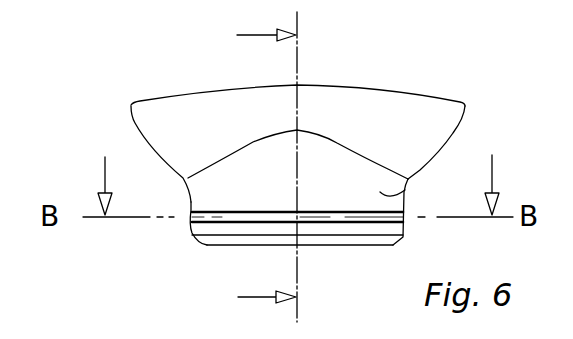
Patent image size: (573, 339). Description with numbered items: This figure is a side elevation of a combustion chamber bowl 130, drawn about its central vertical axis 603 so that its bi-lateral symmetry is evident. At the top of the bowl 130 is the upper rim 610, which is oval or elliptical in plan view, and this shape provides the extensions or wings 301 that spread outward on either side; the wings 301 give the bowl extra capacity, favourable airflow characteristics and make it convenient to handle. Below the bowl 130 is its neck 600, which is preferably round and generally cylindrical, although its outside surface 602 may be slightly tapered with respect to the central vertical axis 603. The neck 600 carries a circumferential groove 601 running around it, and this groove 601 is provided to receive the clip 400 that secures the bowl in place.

The bowl 130 is at (397, 118).
The wings 301 is at (146, 124).
The clip 400 is at (216, 223).
The neck 600 is at (405, 190).
The circumferential groove 601 is at (367, 225).
The outside surface 602 is at (205, 188).
The central vertical axis 603 is at (298, 77).
The upper rim 610 is at (196, 95).